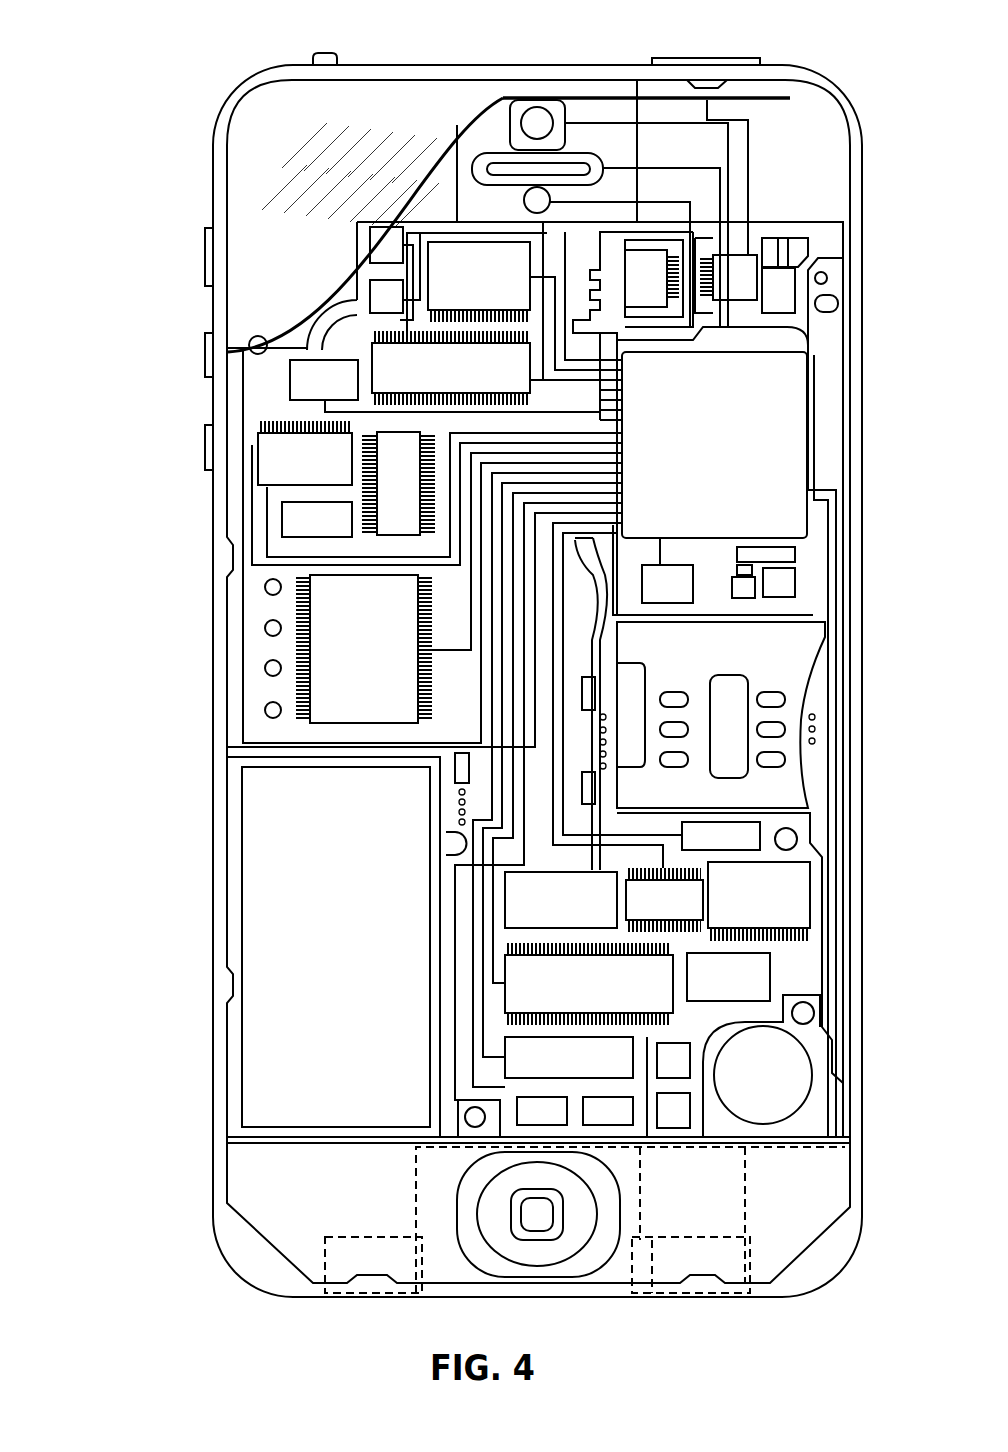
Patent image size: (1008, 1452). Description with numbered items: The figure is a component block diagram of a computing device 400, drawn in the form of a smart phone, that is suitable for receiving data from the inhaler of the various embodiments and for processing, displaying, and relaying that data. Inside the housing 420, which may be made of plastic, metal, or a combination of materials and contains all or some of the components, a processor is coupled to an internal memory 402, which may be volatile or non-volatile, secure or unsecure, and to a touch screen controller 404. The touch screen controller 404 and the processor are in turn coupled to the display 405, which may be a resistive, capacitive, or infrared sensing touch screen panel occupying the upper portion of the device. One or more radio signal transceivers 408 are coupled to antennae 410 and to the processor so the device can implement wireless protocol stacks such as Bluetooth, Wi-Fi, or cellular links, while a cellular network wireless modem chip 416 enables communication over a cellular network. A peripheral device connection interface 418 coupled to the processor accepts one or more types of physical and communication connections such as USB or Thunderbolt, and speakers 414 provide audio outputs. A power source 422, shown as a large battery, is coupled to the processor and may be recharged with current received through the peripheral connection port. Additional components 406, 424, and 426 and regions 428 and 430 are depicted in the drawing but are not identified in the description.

The computing device 400 is at (186, 84).
The internal memory 402 is at (737, 461).
The touch screen controller 404 is at (500, 289).
The display 405 is at (245, 182).
The memory chip 406 is at (470, 382).
The radio signal transceivers 408 is at (745, 255).
The antennae 410 is at (750, 97).
The speakers 414 is at (490, 154).
The cellular network wireless modem chip 416 is at (610, 1002).
The peripheral device connection interface 418 is at (587, 1075).
The housing 420 is at (212, 1168).
The power source 422 is at (360, 962).
The camera 424 is at (539, 108).
The sensor 426 is at (548, 192).
The antenna region 428 is at (325, 1258).
The connector port 430 is at (642, 1296).